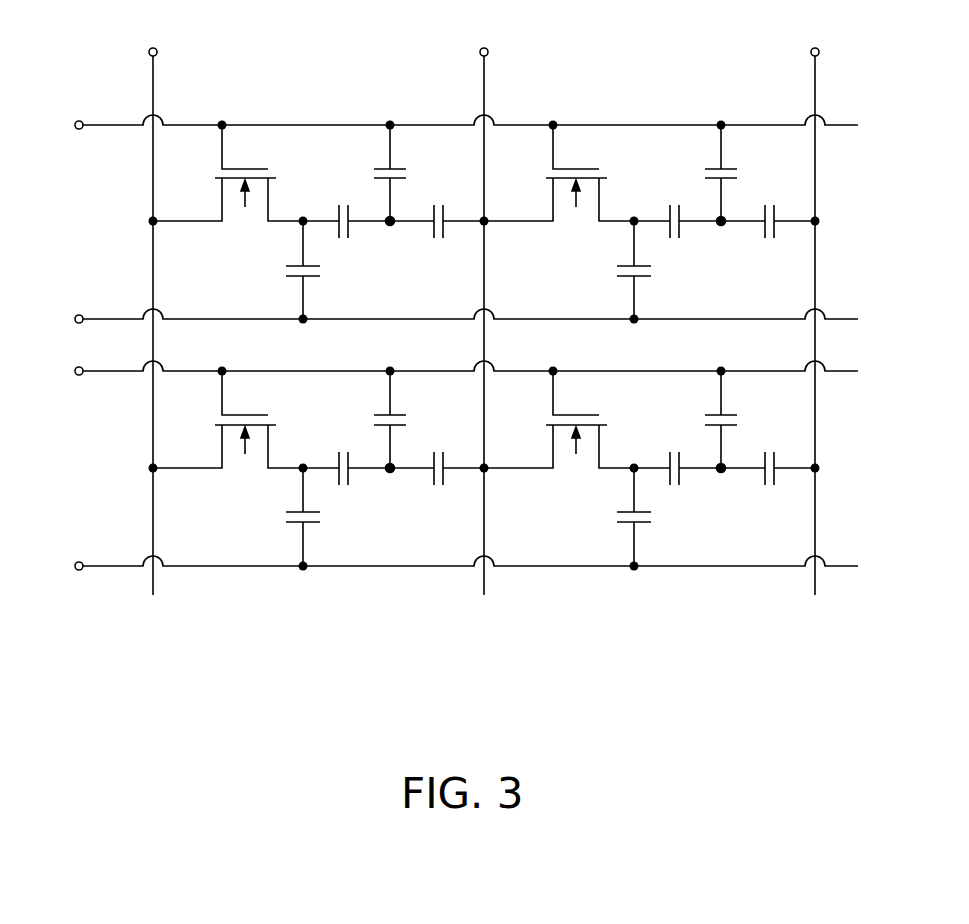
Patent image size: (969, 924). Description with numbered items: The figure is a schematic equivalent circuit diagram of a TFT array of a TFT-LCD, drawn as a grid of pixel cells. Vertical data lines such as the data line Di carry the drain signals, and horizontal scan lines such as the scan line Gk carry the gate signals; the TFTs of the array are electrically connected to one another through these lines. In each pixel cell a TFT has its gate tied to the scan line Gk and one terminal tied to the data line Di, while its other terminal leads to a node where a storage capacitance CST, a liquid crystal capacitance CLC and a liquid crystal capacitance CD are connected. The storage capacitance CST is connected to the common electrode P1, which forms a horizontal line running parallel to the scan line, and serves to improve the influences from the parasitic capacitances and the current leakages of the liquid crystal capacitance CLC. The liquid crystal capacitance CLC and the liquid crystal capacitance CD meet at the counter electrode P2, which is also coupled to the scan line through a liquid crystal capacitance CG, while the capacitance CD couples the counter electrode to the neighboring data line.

The data line Di is at (152, 302).
The scan line Gk is at (447, 128).
The common electrode P1 is at (452, 446).
The counter electrode P2 is at (559, 364).
The storage capacitance CST is at (445, 393).
The liquid crystal capacitance CLC is at (512, 328).
The liquid crystal capacitance CD is at (602, 328).
The liquid crystal capacitance CG is at (555, 296).